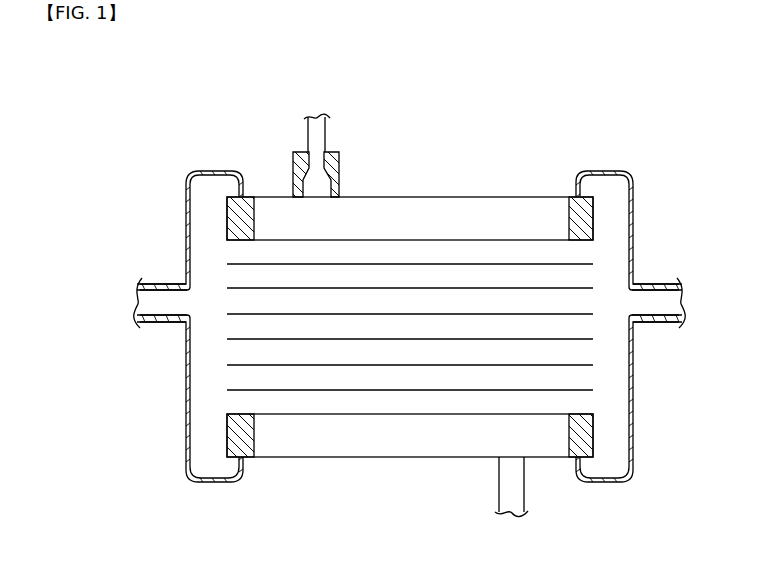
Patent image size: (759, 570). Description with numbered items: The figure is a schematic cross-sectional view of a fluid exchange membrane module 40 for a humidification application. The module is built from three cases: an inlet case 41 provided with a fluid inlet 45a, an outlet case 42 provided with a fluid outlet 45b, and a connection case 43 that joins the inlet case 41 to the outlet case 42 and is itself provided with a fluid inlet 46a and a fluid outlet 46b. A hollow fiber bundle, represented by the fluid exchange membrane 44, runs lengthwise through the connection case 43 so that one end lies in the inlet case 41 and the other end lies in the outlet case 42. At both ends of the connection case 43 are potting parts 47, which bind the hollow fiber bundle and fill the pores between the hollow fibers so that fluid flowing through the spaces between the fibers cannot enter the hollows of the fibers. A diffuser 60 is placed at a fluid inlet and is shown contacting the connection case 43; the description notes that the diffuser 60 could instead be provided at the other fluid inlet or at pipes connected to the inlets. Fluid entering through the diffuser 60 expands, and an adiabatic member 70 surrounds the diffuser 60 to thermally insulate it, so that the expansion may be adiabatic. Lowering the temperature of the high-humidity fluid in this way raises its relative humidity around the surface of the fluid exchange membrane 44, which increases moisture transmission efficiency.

The fluid exchange membrane module 40 is at (110, 153).
The inlet case 41 is at (203, 489).
The outlet case 42 is at (617, 487).
The connection case 43 is at (405, 464).
The fluid exchange membrane 44 is at (453, 278).
The fluid inlet 45a is at (155, 324).
The fluid outlet 45b is at (665, 324).
The fluid inlet 46a is at (289, 161).
The fluid outlet 46b is at (534, 482).
The potting part 47 is at (600, 218).
The diffuser 60 is at (333, 188).
The adiabatic member 70 is at (337, 160).